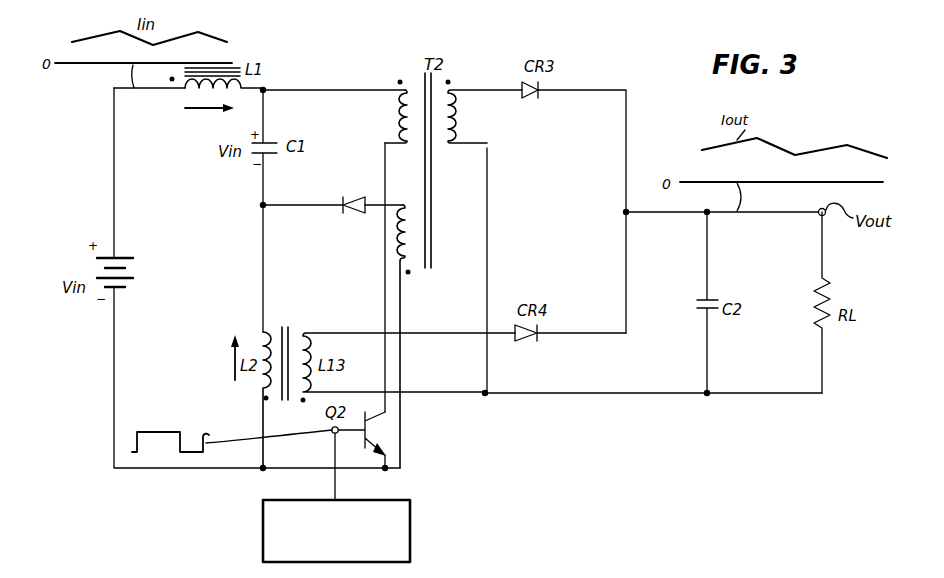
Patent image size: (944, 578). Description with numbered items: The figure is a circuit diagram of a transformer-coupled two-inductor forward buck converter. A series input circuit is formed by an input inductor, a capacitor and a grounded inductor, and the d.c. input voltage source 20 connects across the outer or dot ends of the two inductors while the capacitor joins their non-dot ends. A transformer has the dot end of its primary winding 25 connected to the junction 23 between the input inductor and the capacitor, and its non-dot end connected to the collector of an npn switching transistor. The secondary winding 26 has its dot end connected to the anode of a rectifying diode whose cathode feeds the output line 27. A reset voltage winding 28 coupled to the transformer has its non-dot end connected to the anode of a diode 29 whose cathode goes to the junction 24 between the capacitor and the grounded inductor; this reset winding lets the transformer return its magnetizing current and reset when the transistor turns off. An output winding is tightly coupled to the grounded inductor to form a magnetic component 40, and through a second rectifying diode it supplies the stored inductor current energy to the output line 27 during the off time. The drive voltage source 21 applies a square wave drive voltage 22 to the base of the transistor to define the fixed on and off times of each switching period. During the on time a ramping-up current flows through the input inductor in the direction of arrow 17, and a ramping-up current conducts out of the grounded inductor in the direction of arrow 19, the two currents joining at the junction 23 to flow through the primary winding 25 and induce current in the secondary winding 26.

The arrow 17 is at (200, 112).
The arrow 19 is at (232, 352).
The d.c. input voltage source 20 is at (123, 258).
The drive voltage source 21 is at (383, 499).
The square wave drive voltage 22 is at (180, 422).
The junction 23 is at (268, 86).
The junction 24 is at (265, 318).
The primary winding 25 is at (395, 122).
The secondary winding 26 is at (465, 137).
The output line 27 is at (755, 214).
The reset voltage winding 28 is at (392, 247).
The diode 29 is at (358, 216).
The magnetic component 40 is at (295, 325).